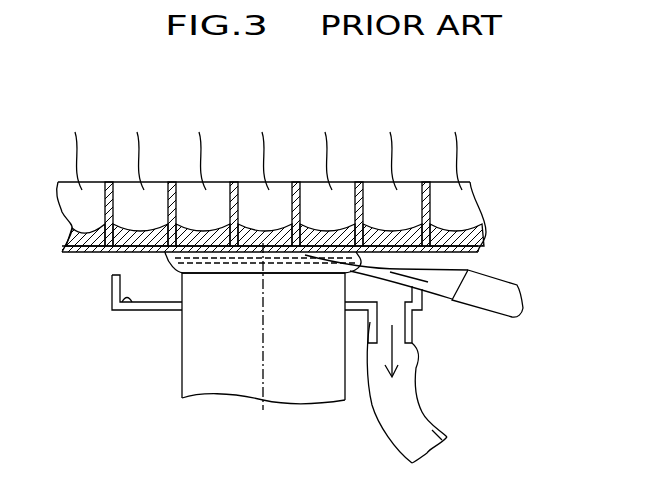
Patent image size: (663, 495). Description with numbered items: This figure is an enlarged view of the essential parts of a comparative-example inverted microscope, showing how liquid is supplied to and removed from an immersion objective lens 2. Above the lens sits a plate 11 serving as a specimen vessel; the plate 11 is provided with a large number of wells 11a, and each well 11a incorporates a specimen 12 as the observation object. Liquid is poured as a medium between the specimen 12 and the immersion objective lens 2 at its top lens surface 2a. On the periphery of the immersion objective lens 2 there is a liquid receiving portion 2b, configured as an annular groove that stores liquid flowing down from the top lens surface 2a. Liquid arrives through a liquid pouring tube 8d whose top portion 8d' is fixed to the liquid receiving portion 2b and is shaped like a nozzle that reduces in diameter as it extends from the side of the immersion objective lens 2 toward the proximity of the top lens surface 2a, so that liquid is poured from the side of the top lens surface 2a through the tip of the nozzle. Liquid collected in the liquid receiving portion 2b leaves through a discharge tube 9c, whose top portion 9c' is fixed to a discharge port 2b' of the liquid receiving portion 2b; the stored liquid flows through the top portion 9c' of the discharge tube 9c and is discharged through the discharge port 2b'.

The plate 11 is at (513, 248).
The well 11a is at (266, 149).
The specimen 12 is at (72, 230).
The immersion objective lens 2 is at (128, 393).
The top lens surface 2a is at (283, 258).
The liquid receiving portion 2b is at (105, 317).
The discharge port 2b' is at (355, 370).
The liquid pouring tube 8d is at (487, 313).
The top portion of the liquid pouring tube 8d' is at (389, 306).
The discharge tube 9c is at (433, 392).
The top portion of the discharge tube 9c' is at (438, 341).